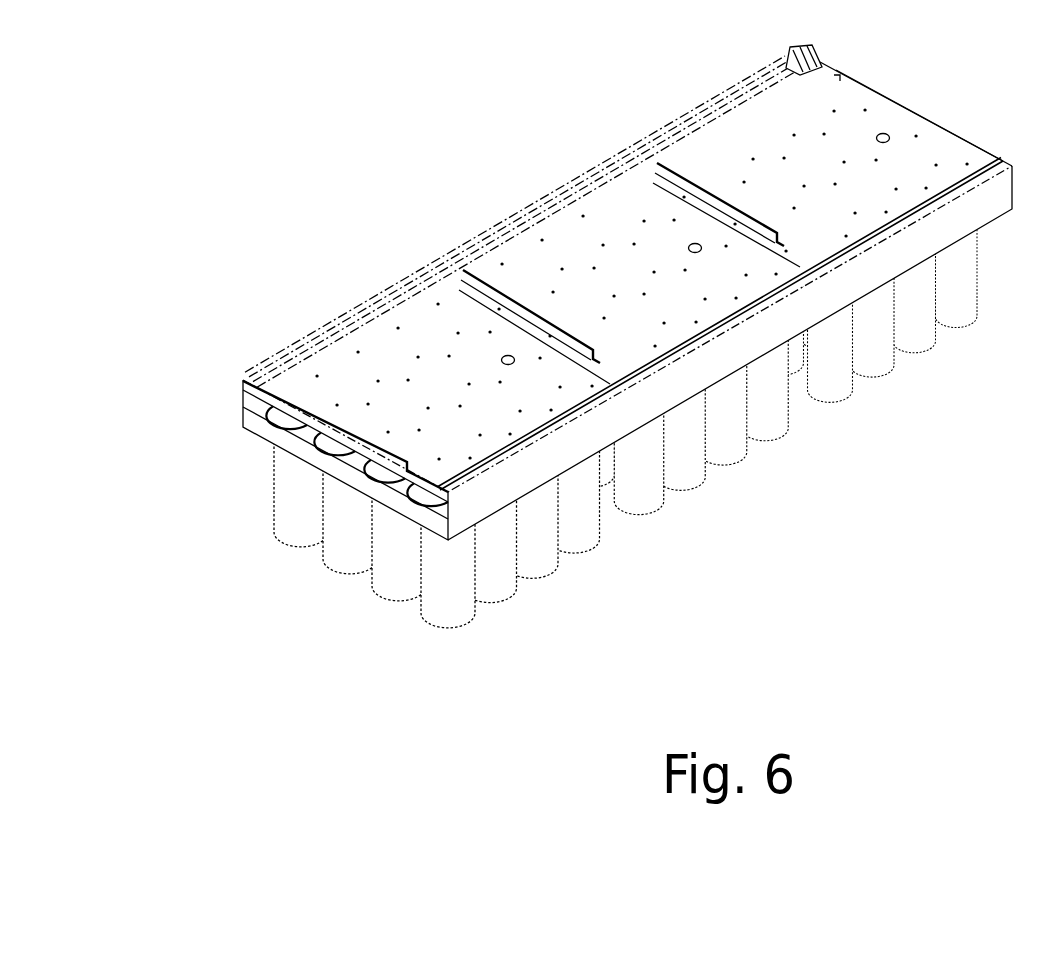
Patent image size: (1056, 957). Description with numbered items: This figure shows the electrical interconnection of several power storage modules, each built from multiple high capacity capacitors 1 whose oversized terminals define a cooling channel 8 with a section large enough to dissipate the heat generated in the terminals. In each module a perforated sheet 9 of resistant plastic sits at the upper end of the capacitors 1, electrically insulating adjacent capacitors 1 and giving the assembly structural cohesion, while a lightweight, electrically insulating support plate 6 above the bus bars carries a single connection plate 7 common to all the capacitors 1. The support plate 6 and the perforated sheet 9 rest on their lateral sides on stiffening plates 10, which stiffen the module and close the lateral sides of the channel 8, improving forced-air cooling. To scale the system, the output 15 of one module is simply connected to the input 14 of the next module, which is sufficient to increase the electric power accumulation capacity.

The high capacity capacitor 1 is at (732, 420).
The support plate 6 is at (368, 457).
The connection plate 7 is at (720, 153).
The cooling channel 8 is at (305, 440).
The perforated sheet 9 is at (338, 472).
The stiffening plate 10 is at (902, 253).
The input 14 is at (790, 60).
The output 15 is at (243, 381).